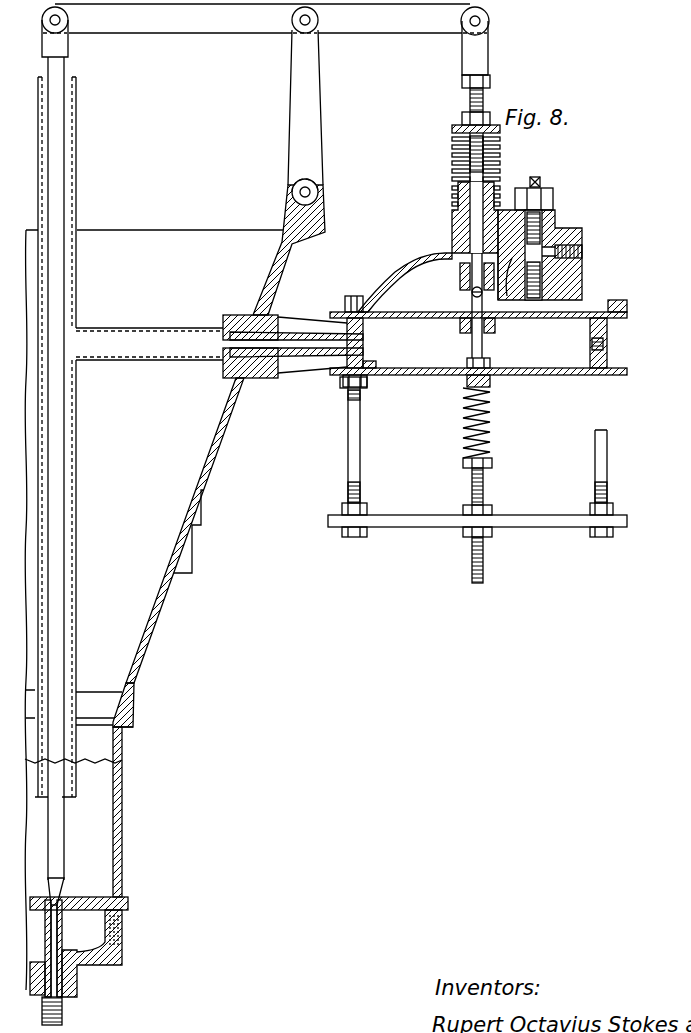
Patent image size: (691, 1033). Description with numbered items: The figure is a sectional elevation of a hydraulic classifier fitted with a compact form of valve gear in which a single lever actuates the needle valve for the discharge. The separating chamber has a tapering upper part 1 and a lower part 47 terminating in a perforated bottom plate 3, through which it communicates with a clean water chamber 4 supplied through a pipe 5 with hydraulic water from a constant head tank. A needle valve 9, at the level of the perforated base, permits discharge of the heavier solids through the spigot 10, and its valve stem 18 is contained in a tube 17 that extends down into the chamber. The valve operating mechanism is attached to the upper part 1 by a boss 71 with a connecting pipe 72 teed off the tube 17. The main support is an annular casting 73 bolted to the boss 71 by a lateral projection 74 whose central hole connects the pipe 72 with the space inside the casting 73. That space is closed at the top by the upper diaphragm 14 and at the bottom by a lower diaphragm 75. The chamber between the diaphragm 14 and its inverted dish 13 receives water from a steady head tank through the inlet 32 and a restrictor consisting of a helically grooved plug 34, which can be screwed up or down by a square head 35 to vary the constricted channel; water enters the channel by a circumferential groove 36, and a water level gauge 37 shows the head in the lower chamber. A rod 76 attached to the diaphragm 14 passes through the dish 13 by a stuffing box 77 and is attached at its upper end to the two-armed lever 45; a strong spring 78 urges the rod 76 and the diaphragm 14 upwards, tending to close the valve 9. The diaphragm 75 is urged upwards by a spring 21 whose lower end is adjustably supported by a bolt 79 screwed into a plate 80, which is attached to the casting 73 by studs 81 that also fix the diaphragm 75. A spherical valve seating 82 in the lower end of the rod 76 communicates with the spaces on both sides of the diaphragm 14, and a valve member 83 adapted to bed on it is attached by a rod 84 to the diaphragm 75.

The tapering upper part 1 is at (212, 466).
The perforated bottom plate 3 is at (88, 900).
The clean water chamber 4 is at (98, 945).
The pipe 5 is at (120, 940).
The needle valve 9 is at (55, 893).
The spigot 10 is at (63, 1010).
The inverted dish 13 is at (395, 276).
The upper diaphragm 14 is at (382, 320).
The tube 17 is at (78, 197).
The valve stem 18 is at (55, 628).
The spring 21 is at (492, 428).
The water inlet 32 is at (583, 250).
The plug 34 is at (537, 300).
The square head 35 is at (540, 185).
The circumferential groove 36 is at (508, 296).
The water level gauge 37 is at (603, 343).
The two-armed lever 45 is at (365, 25).
The lower part 47 is at (122, 822).
The boss 71 is at (262, 370).
The connecting pipe 72 is at (155, 347).
The annular casting 73 is at (375, 366).
The lateral projection 74 is at (317, 357).
The lower diaphragm 75 is at (420, 375).
The rod 76 is at (470, 100).
The stuffing box 77 is at (456, 228).
The strong spring 78 is at (500, 163).
The bolt 79 is at (486, 496).
The plate 80 is at (413, 522).
The studs 81 is at (361, 460).
The spherical valve seating 82 is at (460, 305).
The valve member 83 is at (470, 290).
The rod 84 is at (484, 343).